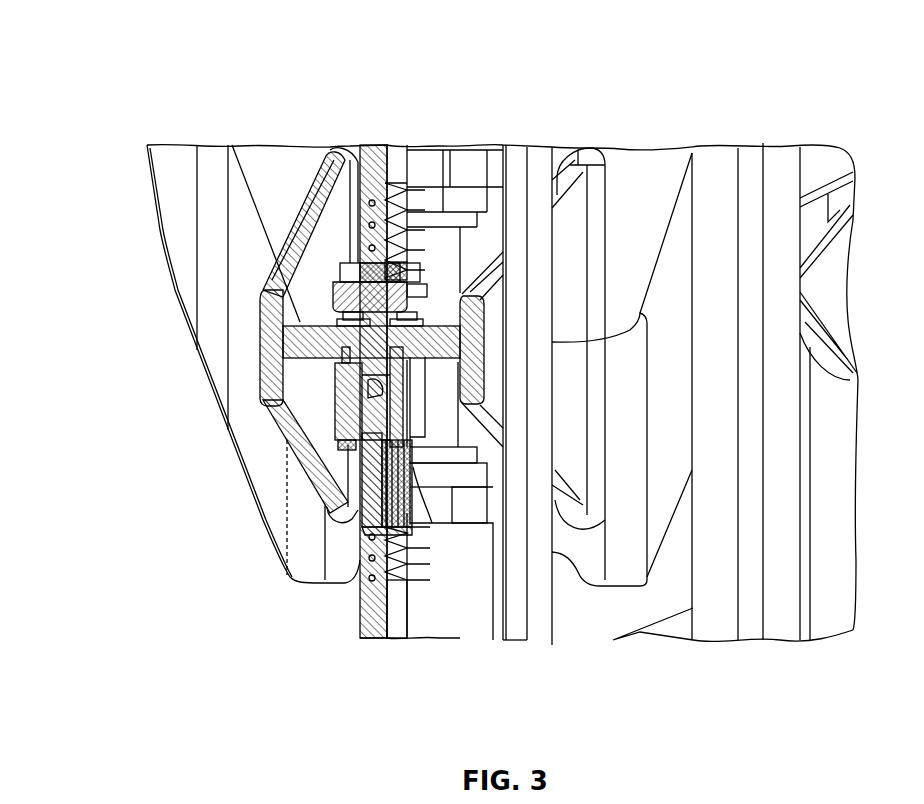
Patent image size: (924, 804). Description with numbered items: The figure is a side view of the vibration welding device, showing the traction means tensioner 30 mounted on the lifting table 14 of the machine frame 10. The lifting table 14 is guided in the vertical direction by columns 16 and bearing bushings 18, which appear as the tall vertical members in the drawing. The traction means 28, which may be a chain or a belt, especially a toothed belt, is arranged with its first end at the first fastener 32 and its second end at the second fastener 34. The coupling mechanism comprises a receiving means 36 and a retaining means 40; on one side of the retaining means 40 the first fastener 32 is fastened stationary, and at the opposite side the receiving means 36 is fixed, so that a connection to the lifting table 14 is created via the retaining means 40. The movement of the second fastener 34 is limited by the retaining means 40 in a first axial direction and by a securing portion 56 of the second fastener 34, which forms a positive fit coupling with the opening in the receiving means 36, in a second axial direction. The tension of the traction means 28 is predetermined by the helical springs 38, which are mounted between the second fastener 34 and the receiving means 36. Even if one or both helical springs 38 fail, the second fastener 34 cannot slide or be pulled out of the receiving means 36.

The machine frame 10 is at (777, 607).
The lifting table 14 is at (318, 157).
The columns 16 is at (437, 256).
The bearing bushings 18 is at (428, 147).
The traction means 28 is at (537, 170).
The traction means tensioner 30 is at (245, 350).
The first fastener 32 is at (340, 300).
The second fastener 34 is at (370, 472).
The receiving means 36 is at (363, 368).
The helical springs 38 is at (432, 510).
The retaining means 40 is at (305, 308).
The securing portion 56 is at (367, 392).